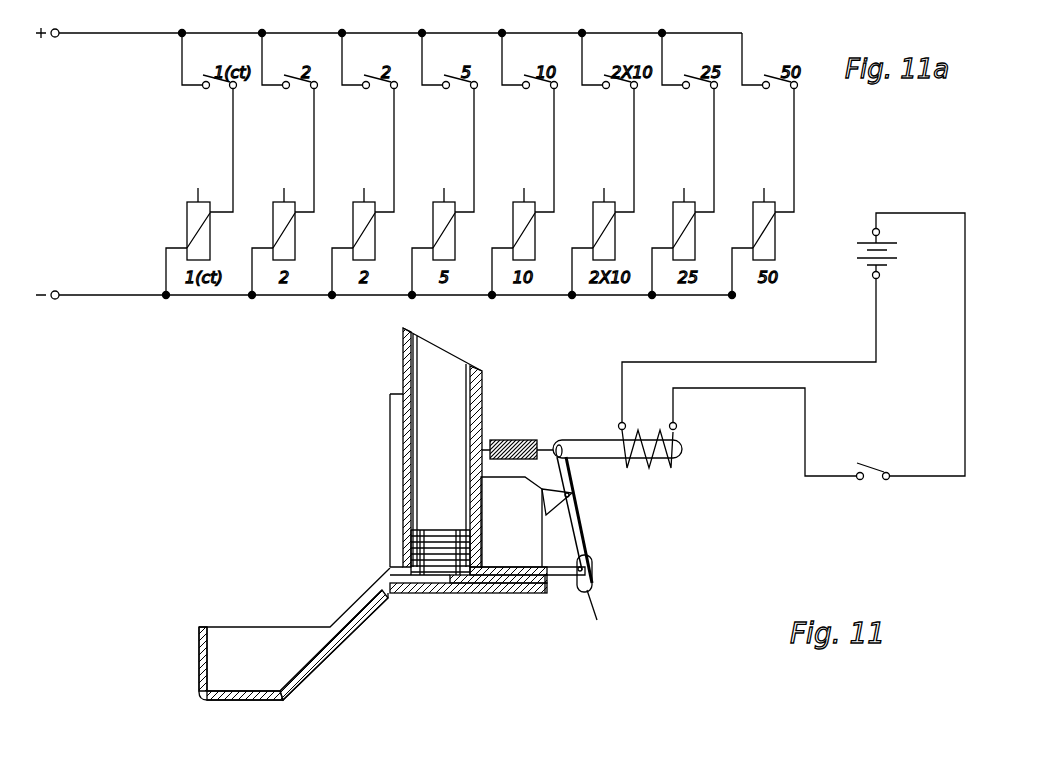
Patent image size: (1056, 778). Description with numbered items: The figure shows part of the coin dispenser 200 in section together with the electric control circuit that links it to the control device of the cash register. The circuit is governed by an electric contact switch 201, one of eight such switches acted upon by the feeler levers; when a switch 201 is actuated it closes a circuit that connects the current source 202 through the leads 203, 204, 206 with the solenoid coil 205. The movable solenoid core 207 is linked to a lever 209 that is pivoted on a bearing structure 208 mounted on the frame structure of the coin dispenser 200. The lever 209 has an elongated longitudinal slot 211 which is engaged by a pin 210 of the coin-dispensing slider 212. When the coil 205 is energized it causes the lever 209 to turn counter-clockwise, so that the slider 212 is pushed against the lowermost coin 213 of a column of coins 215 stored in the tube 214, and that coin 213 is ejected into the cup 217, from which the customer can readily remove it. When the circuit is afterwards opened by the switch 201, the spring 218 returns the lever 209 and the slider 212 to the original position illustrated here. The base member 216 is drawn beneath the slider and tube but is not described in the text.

In FIG. 11, the coin dispenser 200 is at (508, 540).
In FIG. 11A, the electric contact switch 201 is at (218, 90).
In FIG. 11, the electric contact switch 201 is at (868, 474).
In FIG. 11, the current source 202 is at (864, 243).
In FIG. 11, the lead 203 is at (966, 352).
In FIG. 11, the lead 204 is at (738, 390).
In FIG. 11A, the solenoid coil 205 is at (186, 221).
In FIG. 11, the solenoid coil 205 is at (667, 466).
In FIG. 11, the lead 206 is at (683, 361).
In FIG. 11, the movable solenoid core 207 is at (600, 462).
In FIG. 11, the bearing structure 208 is at (548, 508).
In FIG. 11, the lever 209 is at (586, 540).
In FIG. 11, the pin 210 is at (588, 594).
In FIG. 11, the elongated longitudinal slot 211 is at (592, 578).
In FIG. 11, the coin-dispensing slider 212 is at (566, 580).
In FIG. 11, the lowermost coin 213 is at (434, 567).
In FIG. 11, the tube 214 is at (447, 372).
In FIG. 11, the column of coins 215 is at (433, 530).
In FIG. 11, the base 216 is at (392, 569).
In FIG. 11, the cup 217 is at (262, 632).
In FIG. 11, the spring 218 is at (515, 438).